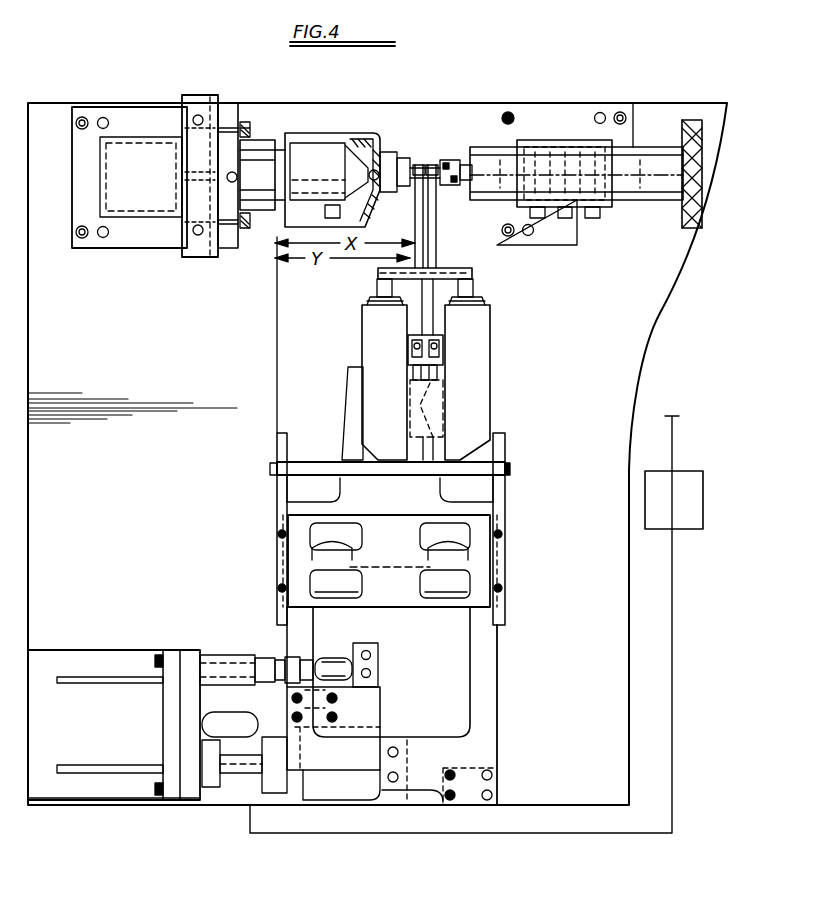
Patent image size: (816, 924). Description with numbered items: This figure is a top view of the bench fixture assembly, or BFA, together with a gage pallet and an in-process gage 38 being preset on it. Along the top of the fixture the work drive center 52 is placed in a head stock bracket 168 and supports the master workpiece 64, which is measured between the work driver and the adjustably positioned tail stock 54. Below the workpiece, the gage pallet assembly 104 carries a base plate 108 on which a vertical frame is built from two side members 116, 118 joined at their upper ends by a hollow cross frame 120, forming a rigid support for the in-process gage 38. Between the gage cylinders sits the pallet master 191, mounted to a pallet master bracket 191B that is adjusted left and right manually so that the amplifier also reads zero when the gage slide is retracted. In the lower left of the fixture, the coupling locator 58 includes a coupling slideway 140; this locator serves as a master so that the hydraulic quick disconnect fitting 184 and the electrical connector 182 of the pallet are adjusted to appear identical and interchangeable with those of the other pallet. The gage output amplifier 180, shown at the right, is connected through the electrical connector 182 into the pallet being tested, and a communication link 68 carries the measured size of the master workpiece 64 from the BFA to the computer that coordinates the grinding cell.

The head stock bracket 168 is at (147, 115).
The work drive center 52 is at (268, 134).
The master workpiece 64 is at (360, 134).
The tail stock 54 is at (615, 208).
The pallet master 191 is at (440, 335).
The pallet master bracket 191B is at (432, 385).
The in-process gage 38 is at (489, 406).
The communication link 68 is at (672, 440).
The gage output amplifier 180 is at (645, 497).
The side member 116 is at (277, 553).
The side member 118 is at (505, 556).
The hollow cross frame 120 is at (395, 595).
The base plate 108 is at (485, 672).
The gage pallet assembly 104 is at (503, 727).
The coupling locator 58 is at (112, 650).
The hydraulic quick disconnect fitting 184 is at (230, 667).
The coupling slideway 140 is at (205, 722).
The electrical connector 182 is at (212, 790).